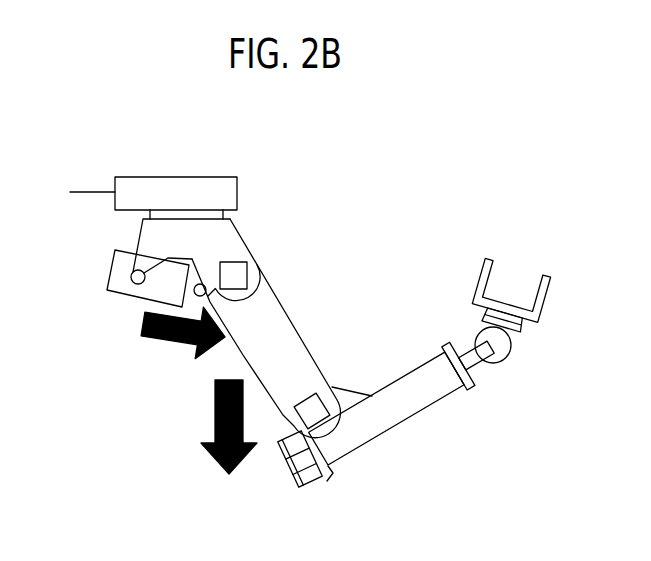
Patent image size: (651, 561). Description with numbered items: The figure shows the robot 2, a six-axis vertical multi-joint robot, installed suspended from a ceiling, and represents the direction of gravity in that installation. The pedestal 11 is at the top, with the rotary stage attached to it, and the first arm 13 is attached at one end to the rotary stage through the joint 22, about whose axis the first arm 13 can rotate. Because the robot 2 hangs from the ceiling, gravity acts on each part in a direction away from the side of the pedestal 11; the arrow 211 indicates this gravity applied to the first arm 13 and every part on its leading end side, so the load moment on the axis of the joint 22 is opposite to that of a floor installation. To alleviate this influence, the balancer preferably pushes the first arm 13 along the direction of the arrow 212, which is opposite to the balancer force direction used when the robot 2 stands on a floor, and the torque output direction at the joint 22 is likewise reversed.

The robot 2 is at (464, 469).
The pedestal 11 is at (237, 185).
The first arm 13 is at (292, 318).
The joint 22 is at (248, 267).
The arrow 211 is at (214, 400).
The arrow 212 is at (160, 341).